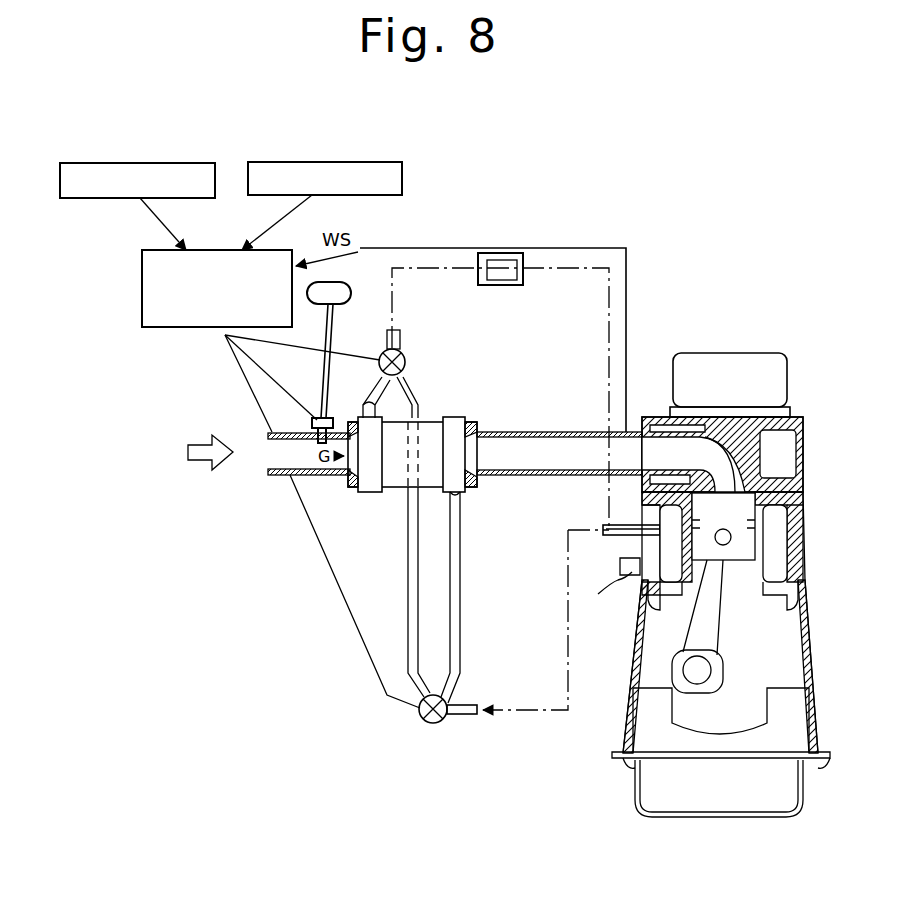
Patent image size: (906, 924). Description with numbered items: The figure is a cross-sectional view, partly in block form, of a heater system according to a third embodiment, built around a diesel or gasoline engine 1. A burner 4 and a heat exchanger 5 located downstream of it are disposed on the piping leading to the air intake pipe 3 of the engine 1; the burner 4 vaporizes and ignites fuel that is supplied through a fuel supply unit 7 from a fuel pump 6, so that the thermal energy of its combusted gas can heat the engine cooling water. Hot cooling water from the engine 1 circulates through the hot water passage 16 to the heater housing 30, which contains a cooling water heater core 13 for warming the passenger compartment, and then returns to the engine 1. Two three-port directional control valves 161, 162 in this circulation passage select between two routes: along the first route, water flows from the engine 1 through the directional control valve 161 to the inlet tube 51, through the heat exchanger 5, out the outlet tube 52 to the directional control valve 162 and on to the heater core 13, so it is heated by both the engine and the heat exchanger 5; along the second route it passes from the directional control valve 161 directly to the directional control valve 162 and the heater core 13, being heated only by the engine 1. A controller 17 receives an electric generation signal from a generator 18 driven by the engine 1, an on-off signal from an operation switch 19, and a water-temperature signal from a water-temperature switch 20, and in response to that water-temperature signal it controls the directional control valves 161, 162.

The engine 1 is at (737, 353).
The air intake pipe 3 is at (538, 432).
The burner 4 is at (333, 418).
The heat exchanger 5 is at (438, 422).
The fuel pump 6 is at (350, 285).
The fuel supply unit 7 is at (328, 330).
The cooling water heater core 13 is at (503, 262).
The hot water passage 16 is at (407, 560).
The controller 17 is at (152, 327).
The generator 18 is at (305, 162).
The operation switch 19 is at (148, 163).
The water-temperature switch 20 is at (604, 597).
The heater housing 30 is at (540, 243).
The inlet tube 51 is at (455, 548).
The outlet tube 52 is at (413, 388).
The directional control valve 161 is at (433, 723).
The directional control valve 162 is at (403, 355).